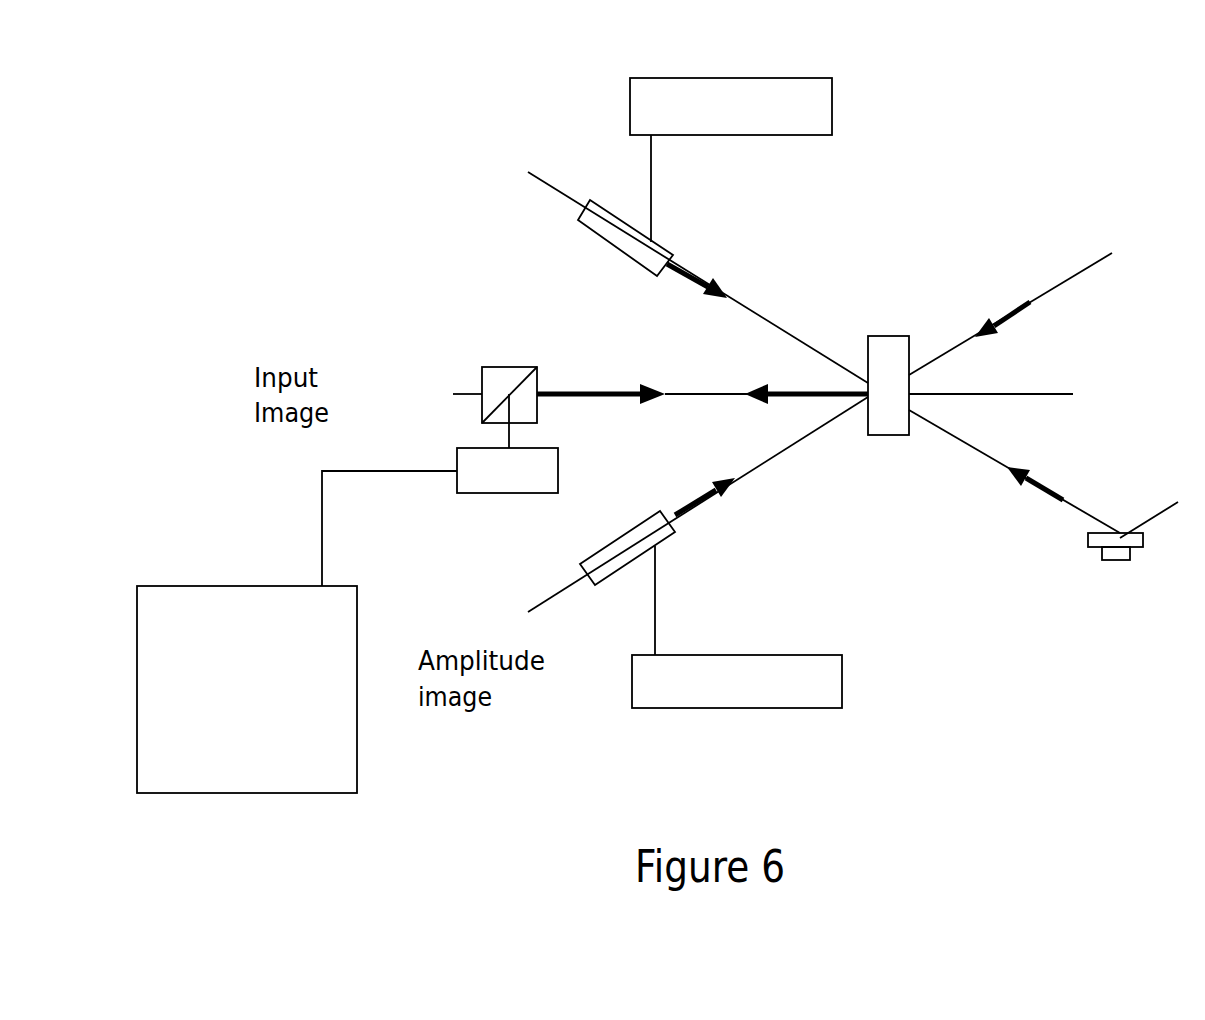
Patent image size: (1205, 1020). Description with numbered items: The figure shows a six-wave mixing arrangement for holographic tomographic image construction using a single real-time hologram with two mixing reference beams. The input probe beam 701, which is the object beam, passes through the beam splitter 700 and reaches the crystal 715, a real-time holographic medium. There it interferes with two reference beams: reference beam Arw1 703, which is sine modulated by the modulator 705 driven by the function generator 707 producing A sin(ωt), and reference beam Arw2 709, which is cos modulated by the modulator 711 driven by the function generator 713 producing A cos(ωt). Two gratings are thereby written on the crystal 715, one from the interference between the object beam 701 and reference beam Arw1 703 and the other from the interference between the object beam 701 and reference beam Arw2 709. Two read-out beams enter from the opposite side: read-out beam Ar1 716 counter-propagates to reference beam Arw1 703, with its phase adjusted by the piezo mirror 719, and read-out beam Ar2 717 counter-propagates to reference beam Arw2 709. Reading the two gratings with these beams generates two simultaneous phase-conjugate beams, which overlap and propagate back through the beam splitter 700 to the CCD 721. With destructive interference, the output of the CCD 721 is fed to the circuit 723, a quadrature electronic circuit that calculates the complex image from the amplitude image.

The beam splitter 700 is at (510, 363).
The input probe beam 701 is at (647, 382).
The reference beam Arw1 703 is at (691, 273).
The modulator 705 is at (613, 252).
The function generator 707 is at (833, 131).
The reference beam Arw2 709 is at (697, 507).
The modulator 711 is at (620, 548).
The function generator 713 is at (813, 706).
The crystal 715 is at (892, 435).
The read-out beam Ar1 716 is at (1040, 480).
The read-out beam Ar2 717 is at (1023, 312).
The piezo mirror 719 is at (1120, 560).
The CCD 721 is at (513, 493).
The circuit for calculation of the complex image 723 is at (297, 632).